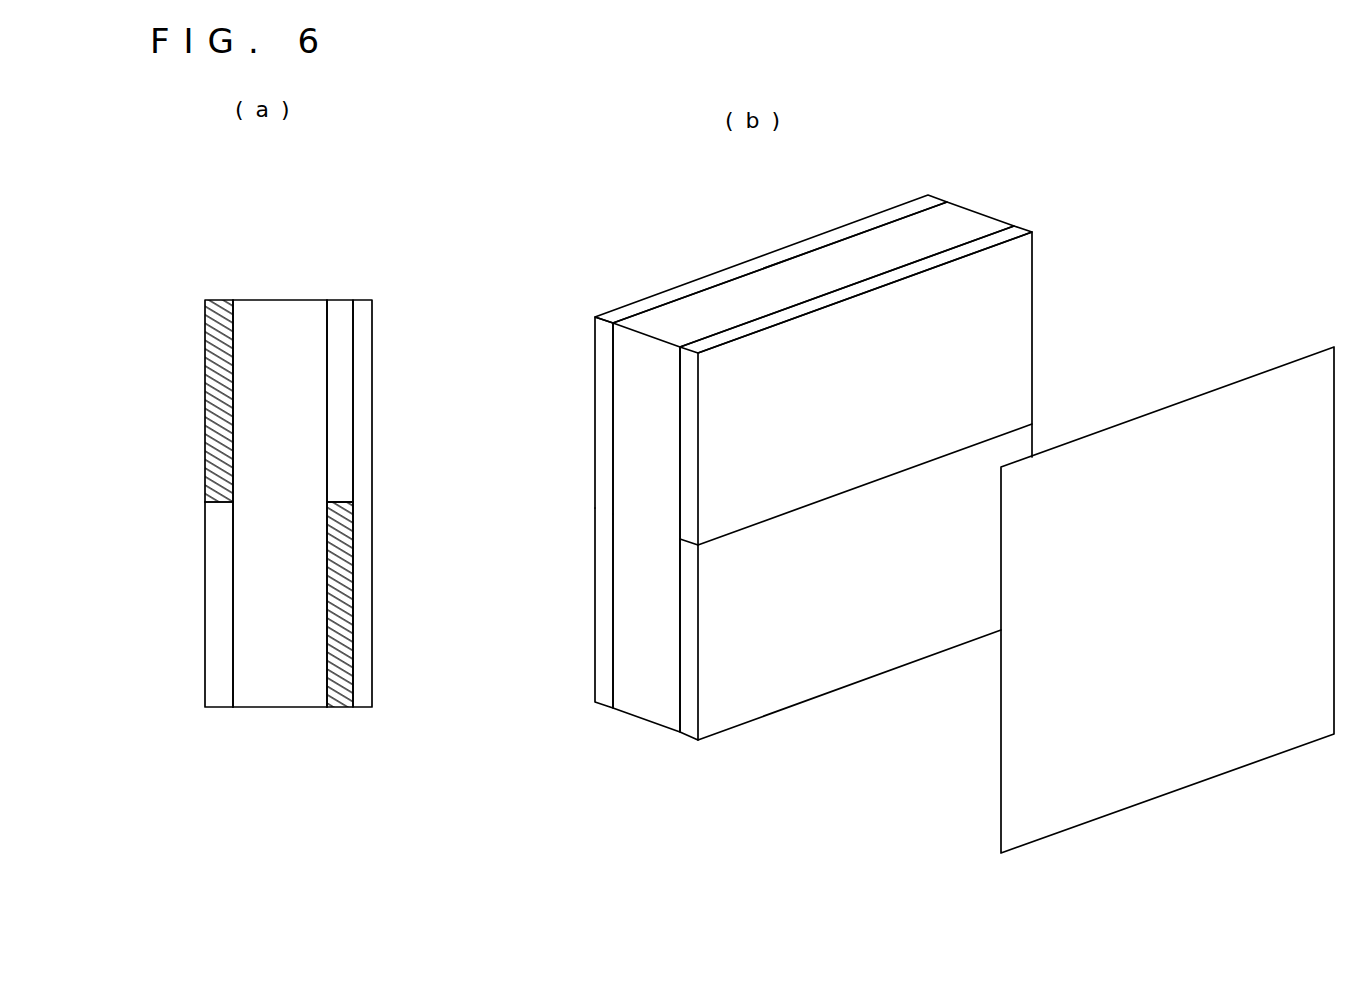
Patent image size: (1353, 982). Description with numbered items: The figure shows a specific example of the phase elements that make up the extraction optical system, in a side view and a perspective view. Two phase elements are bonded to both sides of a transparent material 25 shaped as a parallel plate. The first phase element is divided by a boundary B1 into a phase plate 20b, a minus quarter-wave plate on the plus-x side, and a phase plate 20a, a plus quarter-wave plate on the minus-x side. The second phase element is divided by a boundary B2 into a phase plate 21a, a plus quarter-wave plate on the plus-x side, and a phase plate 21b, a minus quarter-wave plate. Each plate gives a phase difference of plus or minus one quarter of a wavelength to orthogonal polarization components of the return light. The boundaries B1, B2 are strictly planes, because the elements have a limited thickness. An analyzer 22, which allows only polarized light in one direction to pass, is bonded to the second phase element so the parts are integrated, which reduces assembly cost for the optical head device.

The phase plate 20a is at (215, 708).
The phase plate 20b is at (225, 298).
The phase plate 21a is at (342, 298).
The phase plate 21b is at (333, 708).
The analyzer 22 is at (372, 387).
The transparent material 25 is at (273, 690).
The boundary B1 is at (205, 488).
The boundary B2 is at (338, 502).